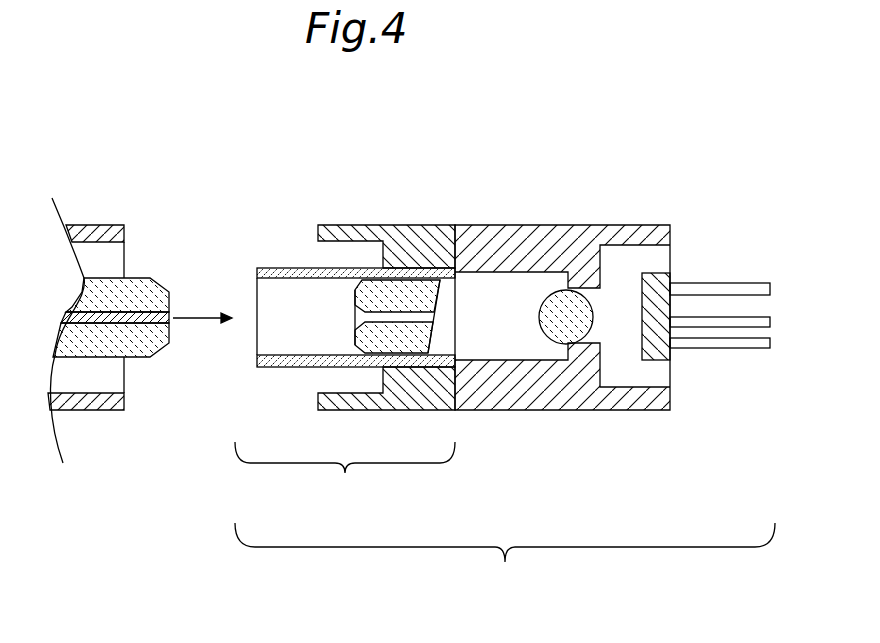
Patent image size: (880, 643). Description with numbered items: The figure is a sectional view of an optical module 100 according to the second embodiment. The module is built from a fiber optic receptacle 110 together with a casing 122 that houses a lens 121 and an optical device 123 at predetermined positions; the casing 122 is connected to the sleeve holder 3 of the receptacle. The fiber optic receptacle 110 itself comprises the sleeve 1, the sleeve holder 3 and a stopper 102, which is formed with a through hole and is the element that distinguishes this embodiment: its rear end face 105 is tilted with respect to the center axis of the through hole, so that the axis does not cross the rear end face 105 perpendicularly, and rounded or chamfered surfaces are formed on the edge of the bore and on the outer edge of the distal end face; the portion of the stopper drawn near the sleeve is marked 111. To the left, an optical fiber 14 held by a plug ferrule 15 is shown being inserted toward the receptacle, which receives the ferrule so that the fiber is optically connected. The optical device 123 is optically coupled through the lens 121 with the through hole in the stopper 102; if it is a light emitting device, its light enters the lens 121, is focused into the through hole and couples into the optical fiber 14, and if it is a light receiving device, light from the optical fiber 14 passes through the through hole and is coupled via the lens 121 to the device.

The sleeve 1 is at (281, 275).
The sleeve holder 3 is at (333, 230).
The optical fiber 14 is at (143, 313).
The plug ferrule 15 is at (102, 338).
The optical module 100 is at (505, 561).
The stopper 102 is at (418, 287).
The rear end face 105 is at (433, 295).
The fiber optic receptacle 110 is at (345, 474).
The inner element left end 111 is at (355, 297).
The lens 121 is at (562, 327).
The casing 122 is at (641, 230).
The optical device 123 is at (660, 280).